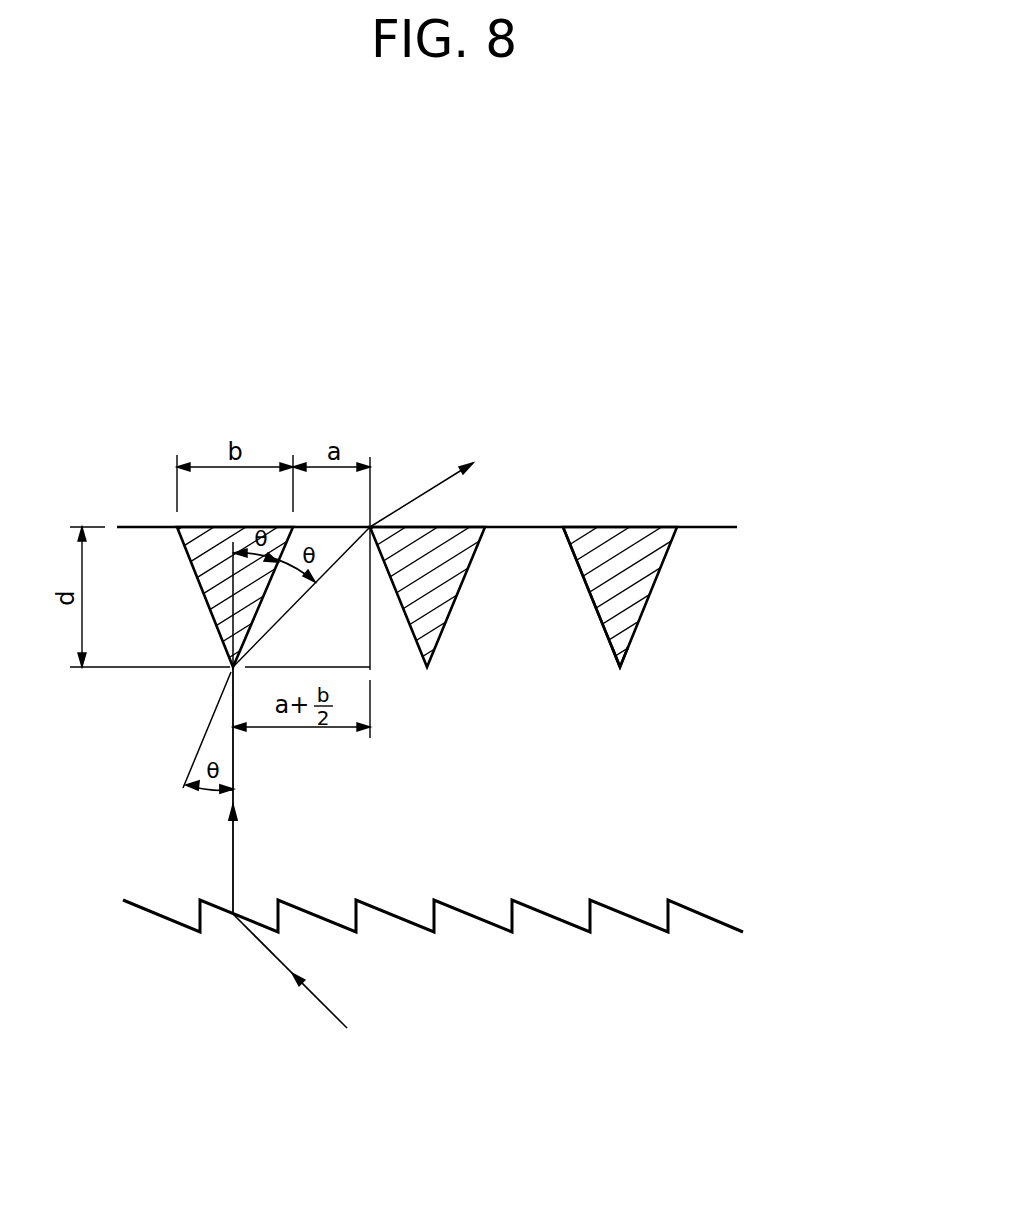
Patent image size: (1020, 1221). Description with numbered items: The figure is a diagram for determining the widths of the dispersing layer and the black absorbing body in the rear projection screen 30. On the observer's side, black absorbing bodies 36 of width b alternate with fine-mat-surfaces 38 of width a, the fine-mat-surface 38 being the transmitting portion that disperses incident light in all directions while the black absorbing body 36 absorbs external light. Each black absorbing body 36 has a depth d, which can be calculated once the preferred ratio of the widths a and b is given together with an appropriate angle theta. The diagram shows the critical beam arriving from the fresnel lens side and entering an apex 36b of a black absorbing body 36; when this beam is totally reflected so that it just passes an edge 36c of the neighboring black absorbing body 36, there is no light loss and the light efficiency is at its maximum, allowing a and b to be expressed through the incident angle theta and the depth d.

The rear projection screen 30 is at (700, 787).
The black absorbing body 36 is at (623, 567).
The apex 36b is at (620, 667).
The edge 36c is at (563, 527).
The fine-mat-surface 38 is at (707, 550).